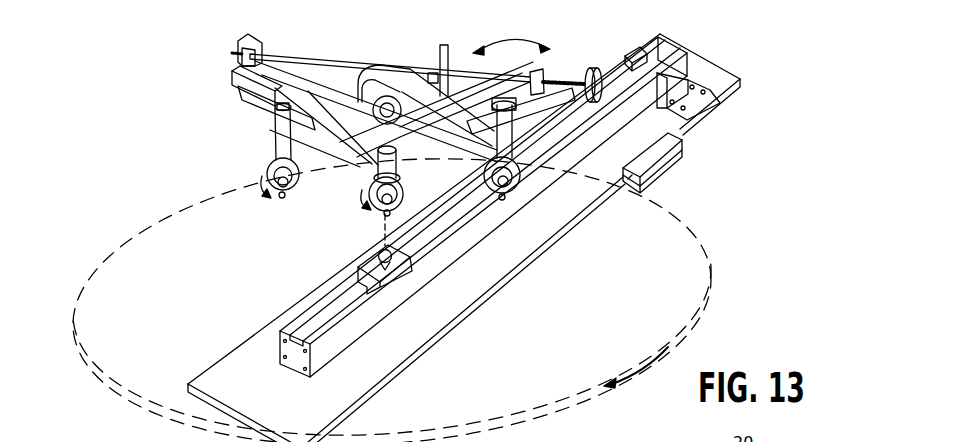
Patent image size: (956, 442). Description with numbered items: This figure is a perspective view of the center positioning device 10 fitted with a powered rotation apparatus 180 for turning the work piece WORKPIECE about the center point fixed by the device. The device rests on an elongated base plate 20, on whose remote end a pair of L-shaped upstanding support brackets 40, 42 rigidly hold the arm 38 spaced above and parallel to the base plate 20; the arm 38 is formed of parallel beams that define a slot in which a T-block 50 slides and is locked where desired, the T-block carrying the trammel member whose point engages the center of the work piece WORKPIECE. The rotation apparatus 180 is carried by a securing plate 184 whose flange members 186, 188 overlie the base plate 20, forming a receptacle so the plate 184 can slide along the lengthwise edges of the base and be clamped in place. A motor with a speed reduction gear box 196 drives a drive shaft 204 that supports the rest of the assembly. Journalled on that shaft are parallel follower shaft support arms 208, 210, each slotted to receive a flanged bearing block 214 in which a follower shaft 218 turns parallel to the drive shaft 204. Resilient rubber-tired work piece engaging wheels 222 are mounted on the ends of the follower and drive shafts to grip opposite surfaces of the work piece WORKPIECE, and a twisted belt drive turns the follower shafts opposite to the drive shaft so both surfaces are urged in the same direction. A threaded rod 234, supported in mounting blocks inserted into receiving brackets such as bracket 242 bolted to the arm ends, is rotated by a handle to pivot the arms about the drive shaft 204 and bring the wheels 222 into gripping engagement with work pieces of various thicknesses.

The center positioning device 10 is at (745, 85).
The base plate 20 is at (368, 380).
The arm 38 is at (478, 237).
The L-shaped upstanding support bracket 40 is at (697, 87).
The L-shaped upstanding support bracket 42 is at (645, 38).
The T-block 50 is at (398, 262).
The powered rotation apparatus 180 is at (577, 27).
The securing plate 184 is at (667, 172).
The flange member 186 is at (574, 84).
The flange member 188 is at (662, 148).
The speed reduction gear box 196 is at (395, 80).
The drive shaft 204 is at (372, 102).
The follower shaft support arm 208 is at (417, 163).
The follower shaft support arm 210 is at (240, 91).
The flanged bearing block 214 is at (262, 101).
The follower shaft 218 is at (275, 135).
The work piece engaging wheel 222 is at (300, 181).
The threaded rod 234 is at (352, 58).
The receiving bracket 242 is at (253, 40).
The work piece WORKPIECE is at (717, 237).